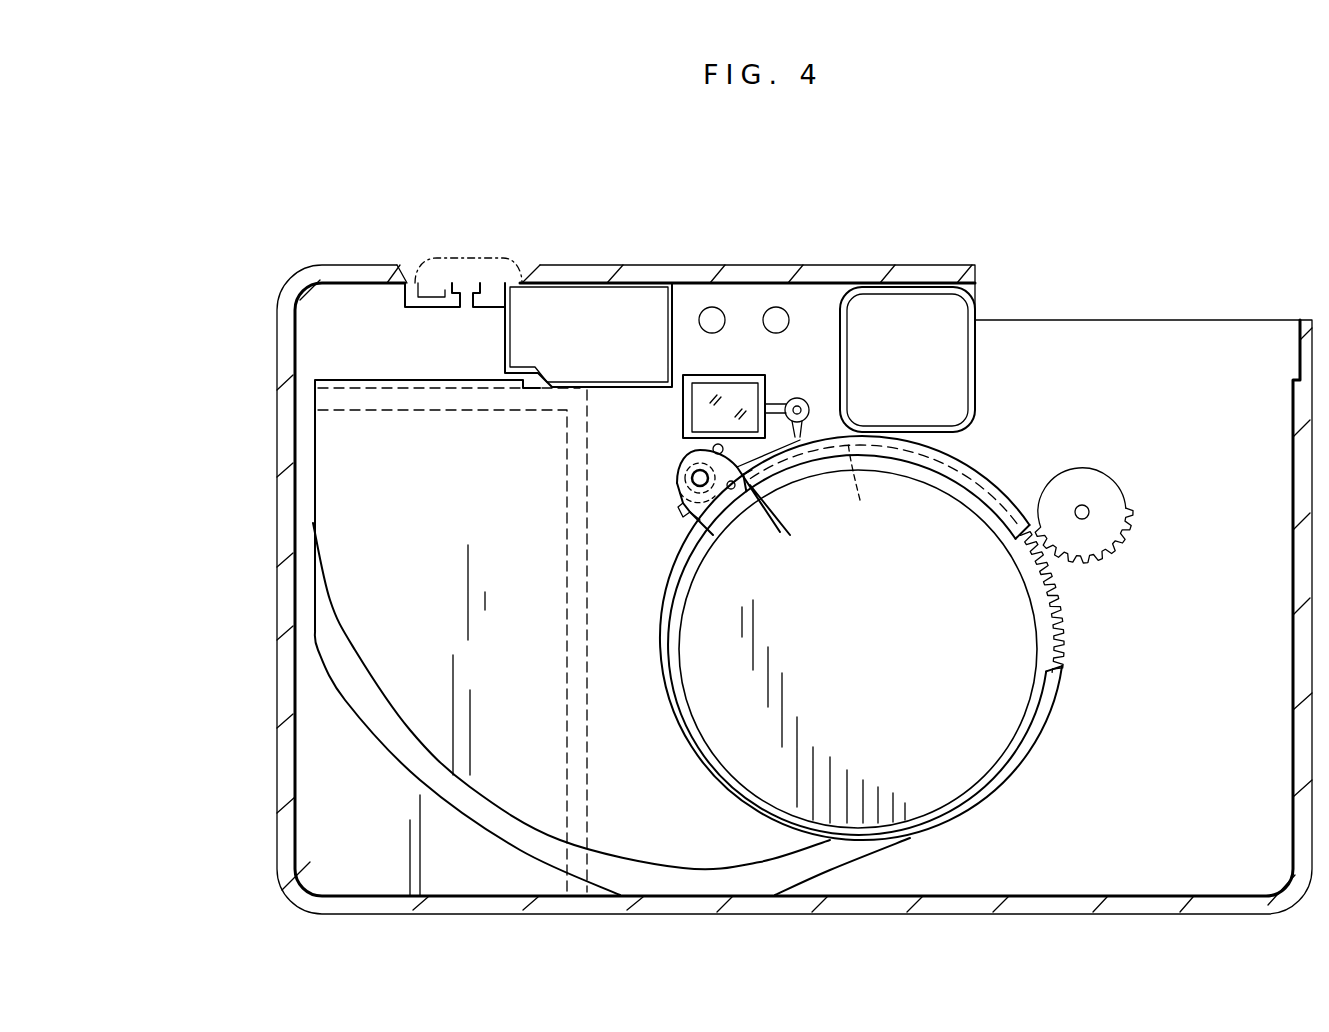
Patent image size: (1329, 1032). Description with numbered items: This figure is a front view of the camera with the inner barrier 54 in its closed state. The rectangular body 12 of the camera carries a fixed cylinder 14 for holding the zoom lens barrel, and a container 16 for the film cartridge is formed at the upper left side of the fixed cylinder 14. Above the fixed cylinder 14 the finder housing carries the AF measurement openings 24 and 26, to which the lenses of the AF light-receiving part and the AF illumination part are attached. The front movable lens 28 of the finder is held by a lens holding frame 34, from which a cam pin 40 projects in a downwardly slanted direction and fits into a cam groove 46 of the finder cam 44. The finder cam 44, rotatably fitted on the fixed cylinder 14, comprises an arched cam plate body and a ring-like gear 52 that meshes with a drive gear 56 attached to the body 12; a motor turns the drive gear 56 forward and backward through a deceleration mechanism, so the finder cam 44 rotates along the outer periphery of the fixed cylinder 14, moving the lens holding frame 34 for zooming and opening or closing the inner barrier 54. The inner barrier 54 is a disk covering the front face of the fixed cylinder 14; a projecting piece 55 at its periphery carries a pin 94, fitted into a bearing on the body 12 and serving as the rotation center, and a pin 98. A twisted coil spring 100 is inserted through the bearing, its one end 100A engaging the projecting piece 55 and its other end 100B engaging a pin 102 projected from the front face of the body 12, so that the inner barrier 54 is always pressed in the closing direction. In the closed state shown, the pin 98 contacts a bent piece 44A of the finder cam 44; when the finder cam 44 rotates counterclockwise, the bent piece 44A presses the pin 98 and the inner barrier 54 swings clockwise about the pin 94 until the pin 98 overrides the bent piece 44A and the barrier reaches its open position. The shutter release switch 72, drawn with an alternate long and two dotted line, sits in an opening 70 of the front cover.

The body 12 is at (797, 247).
The fixed cylinder 14 is at (1035, 708).
The container of the film cartridge 16 is at (337, 500).
The AF measurement opening 24 is at (598, 322).
The AF measurement opening 26 is at (922, 318).
The movable lens 28 is at (700, 418).
The lens holding frame 34 is at (690, 392).
The cam pin 40 is at (866, 486).
The finder cam 44 is at (984, 455).
The bent piece 44A is at (752, 505).
The cam groove 46 is at (835, 443).
The gear 52 is at (1062, 598).
The inner barrier 54 is at (690, 686).
The projecting piece 55 is at (684, 502).
The drive gear 56 is at (1112, 498).
The opening 70 is at (433, 298).
The shutter release switch 72 is at (470, 250).
The pin 94 is at (690, 480).
The pin 98 is at (731, 490).
The twisted coil spring 100 is at (680, 460).
The one end of the twisted coil spring 100A is at (688, 512).
The other end of the twisted coil spring 100B is at (760, 492).
The pin 102 is at (765, 462).